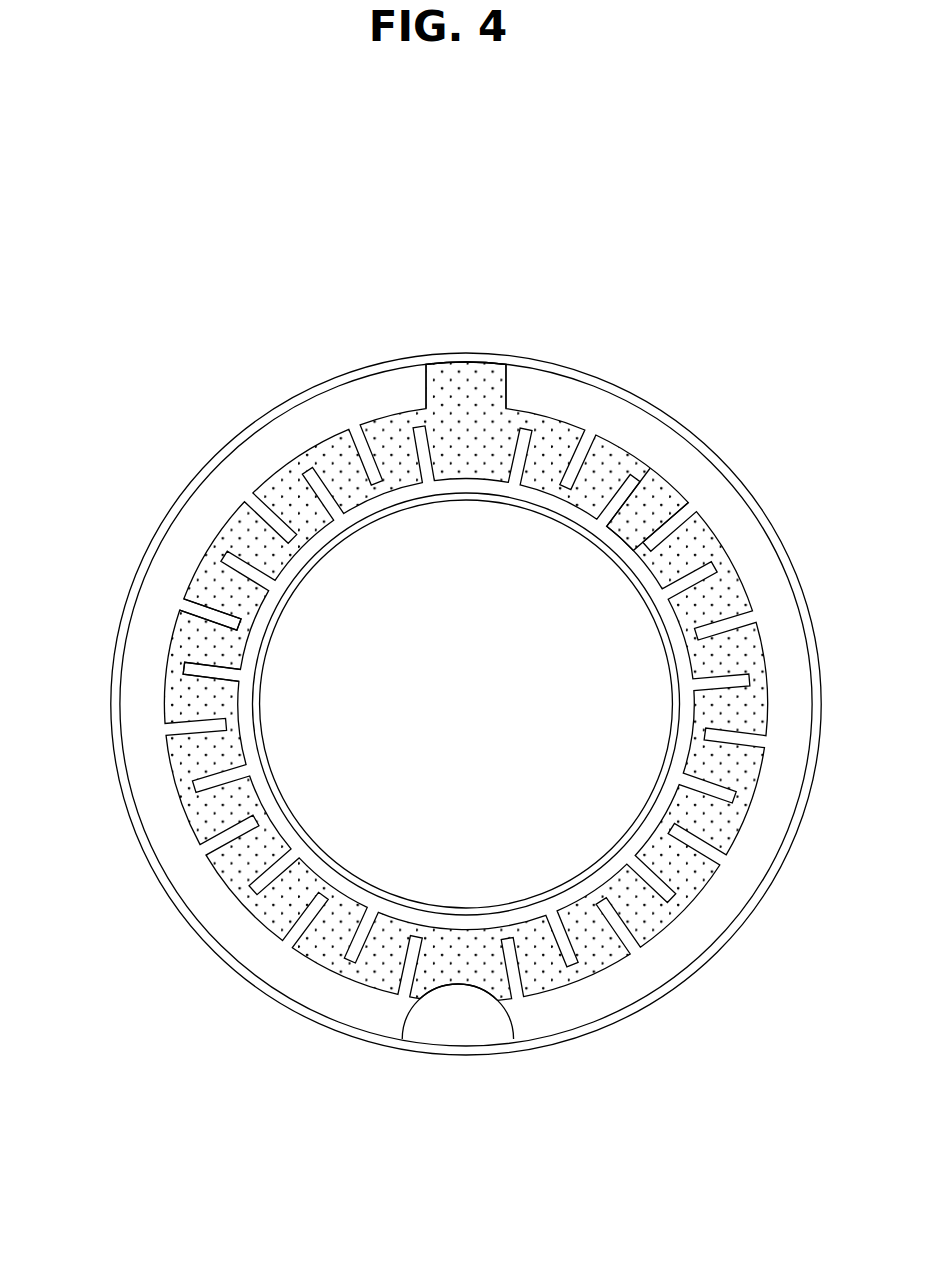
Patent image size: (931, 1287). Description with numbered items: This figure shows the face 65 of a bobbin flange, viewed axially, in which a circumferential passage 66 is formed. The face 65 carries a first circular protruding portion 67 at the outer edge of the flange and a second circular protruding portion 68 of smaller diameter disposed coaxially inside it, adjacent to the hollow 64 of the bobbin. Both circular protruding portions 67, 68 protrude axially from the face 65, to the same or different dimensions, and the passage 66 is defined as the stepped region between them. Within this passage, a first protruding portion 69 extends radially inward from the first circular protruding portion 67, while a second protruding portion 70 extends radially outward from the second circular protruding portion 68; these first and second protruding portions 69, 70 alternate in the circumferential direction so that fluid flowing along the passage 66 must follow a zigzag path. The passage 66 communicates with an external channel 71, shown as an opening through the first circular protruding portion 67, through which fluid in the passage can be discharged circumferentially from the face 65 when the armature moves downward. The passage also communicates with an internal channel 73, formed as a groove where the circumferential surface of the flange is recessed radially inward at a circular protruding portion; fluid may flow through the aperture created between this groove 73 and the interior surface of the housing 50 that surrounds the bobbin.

The housing 50 is at (620, 1020).
The hollow 64 is at (392, 818).
The face 65 is at (224, 247).
The circumferential passage 66 is at (660, 500).
The first circular protruding portion 67 is at (219, 457).
The second circular protruding portion 68 is at (257, 650).
The first protruding portion 69 is at (207, 608).
The second protruding portion 70 is at (213, 670).
The external channel 71 is at (470, 390).
The internal channel 73 is at (465, 1020).